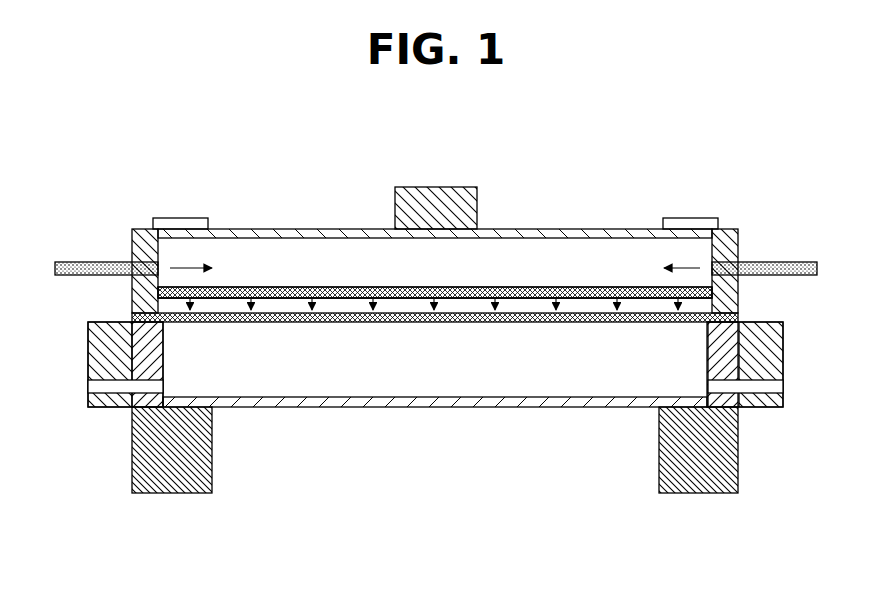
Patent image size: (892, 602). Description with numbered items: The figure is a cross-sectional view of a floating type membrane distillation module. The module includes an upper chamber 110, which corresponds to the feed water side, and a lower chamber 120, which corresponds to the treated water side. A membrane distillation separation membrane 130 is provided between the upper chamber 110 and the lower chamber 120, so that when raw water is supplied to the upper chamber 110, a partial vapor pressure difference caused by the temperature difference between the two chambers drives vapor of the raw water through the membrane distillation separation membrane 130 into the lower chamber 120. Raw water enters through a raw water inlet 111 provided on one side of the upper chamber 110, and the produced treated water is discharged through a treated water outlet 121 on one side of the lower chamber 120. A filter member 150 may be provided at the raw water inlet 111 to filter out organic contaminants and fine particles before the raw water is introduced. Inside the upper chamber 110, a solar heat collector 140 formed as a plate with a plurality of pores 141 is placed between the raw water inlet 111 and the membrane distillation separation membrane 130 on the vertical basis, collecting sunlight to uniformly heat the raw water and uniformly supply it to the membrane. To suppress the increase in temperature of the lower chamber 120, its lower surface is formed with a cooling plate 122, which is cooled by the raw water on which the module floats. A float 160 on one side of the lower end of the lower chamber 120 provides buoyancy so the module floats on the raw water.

The upper chamber 110 is at (733, 229).
The raw water inlet 111 is at (158, 264).
The lower chamber 120 is at (435, 400).
The treated water outlet 121 is at (92, 388).
The cooling plate 122 is at (308, 407).
The membrane distillation separation membrane 130 is at (404, 322).
The solar heat collector 140 is at (519, 284).
The pores 141 is at (330, 287).
The filter member 150 is at (75, 262).
The float 160 is at (160, 493).